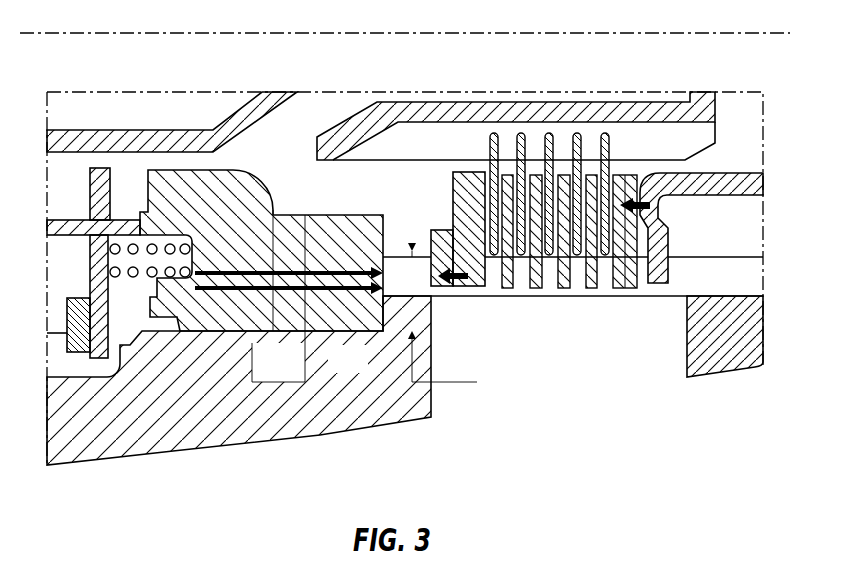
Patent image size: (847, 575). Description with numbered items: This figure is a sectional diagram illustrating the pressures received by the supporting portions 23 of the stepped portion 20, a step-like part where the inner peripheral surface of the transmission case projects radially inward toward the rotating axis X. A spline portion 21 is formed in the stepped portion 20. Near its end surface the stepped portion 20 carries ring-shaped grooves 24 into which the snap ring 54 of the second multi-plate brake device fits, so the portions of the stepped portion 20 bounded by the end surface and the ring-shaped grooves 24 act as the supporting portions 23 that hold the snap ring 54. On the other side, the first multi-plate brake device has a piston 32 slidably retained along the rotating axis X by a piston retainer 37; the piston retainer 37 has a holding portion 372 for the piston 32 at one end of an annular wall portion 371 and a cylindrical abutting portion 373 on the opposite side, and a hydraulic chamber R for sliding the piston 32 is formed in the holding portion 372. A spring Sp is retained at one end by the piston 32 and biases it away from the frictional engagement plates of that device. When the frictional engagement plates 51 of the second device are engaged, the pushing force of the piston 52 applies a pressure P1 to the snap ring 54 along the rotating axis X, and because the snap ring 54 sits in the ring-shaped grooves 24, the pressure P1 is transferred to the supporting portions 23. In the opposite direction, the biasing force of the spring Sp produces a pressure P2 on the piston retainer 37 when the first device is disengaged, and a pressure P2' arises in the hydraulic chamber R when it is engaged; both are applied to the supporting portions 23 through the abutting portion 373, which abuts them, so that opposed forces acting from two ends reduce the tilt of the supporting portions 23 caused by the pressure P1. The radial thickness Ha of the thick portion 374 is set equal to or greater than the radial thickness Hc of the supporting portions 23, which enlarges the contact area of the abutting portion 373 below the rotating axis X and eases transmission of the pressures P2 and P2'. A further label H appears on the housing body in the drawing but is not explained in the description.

The stepped portion 20 is at (753, 253).
The spline portion 21 is at (600, 296).
The supporting portions 23 is at (400, 263).
The ring-shaped grooves 24 is at (441, 288).
The piston 32 is at (121, 199).
The piston retainer 37 is at (261, 193).
The annular wall portion 371 is at (222, 332).
The holding portion 372 is at (185, 170).
The abutting portion 373 is at (330, 214).
The thick portion 374 is at (306, 214).
The frictional engagement plates 51 is at (549, 133).
The piston 52 is at (740, 183).
The snap ring 54 is at (447, 229).
The housing H is at (431, 418).
The radial thickness of the thick portion Ha is at (278, 301).
The radial thickness of the supporting portions Hc is at (442, 360).
The pressure P1 is at (477, 286).
The pressure P2 is at (289, 253).
The pressure P2' is at (348, 360).
The hydraulic chamber R is at (218, 298).
The spring Sp is at (133, 279).
The rotating axis X is at (418, 34).